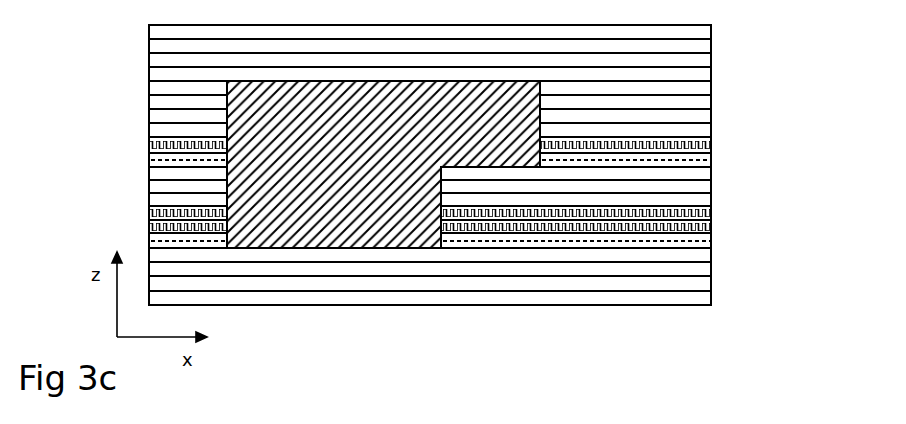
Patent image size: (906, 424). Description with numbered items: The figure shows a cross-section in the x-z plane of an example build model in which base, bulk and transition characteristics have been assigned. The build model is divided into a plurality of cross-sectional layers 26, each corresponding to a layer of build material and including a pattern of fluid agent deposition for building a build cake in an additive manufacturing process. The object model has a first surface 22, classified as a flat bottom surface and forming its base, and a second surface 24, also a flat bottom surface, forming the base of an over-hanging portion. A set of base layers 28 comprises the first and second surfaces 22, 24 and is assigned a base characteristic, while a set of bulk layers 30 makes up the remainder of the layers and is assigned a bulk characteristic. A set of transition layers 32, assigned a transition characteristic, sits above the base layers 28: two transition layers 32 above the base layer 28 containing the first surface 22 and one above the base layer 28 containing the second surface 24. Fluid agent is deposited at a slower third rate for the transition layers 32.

The first surface 22 is at (329, 248).
The second surface 24 is at (500, 167).
The cross-sectional layers 26 is at (149, 74).
The base layers 28 is at (723, 153).
The bulk layers 30 is at (723, 25).
The transition layers 32 is at (723, 137).